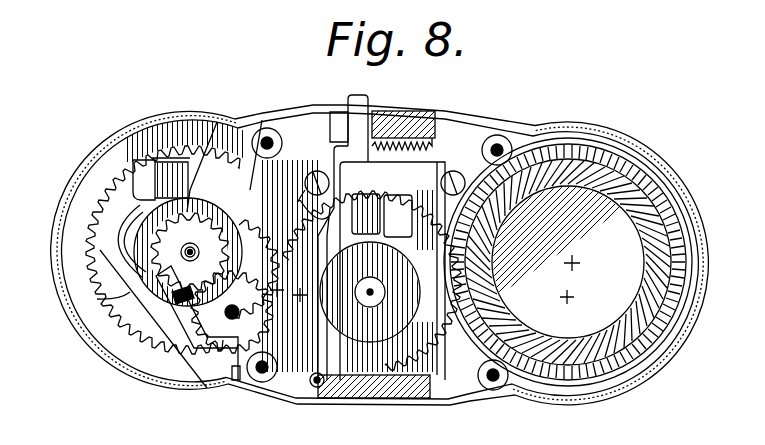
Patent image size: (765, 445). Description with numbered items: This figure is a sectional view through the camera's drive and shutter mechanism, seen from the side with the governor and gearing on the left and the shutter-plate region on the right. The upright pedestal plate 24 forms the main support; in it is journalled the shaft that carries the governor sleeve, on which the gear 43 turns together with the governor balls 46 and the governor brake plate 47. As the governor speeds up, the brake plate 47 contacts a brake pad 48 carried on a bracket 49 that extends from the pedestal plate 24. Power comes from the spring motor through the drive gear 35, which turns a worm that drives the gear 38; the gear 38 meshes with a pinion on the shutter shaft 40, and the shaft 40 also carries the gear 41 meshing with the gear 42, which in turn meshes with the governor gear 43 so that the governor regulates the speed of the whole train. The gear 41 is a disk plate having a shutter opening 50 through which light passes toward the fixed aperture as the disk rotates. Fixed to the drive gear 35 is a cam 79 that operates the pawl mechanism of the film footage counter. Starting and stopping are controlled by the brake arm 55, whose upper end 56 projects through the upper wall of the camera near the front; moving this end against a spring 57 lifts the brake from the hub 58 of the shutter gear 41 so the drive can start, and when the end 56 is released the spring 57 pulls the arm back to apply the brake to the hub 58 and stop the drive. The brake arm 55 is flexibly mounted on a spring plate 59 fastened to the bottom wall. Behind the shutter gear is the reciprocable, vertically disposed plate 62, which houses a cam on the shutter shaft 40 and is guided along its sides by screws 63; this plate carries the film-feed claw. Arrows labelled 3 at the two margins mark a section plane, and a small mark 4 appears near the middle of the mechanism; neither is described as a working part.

The section line 3- 3 is at (33, 236).
The axis marks 4 is at (288, 300).
The pedestal plate 24 is at (240, 202).
The drive gear 35 is at (152, 343).
The gear 38 is at (270, 262).
The shutter shaft 40 is at (382, 284).
The shutter gear 41 is at (437, 374).
The gear 42 is at (186, 340).
The gear 43 is at (248, 220).
The governor balls 46 is at (147, 227).
The governor brake plate 47 is at (97, 299).
The brake pad 48 is at (168, 305).
The bracket 49 is at (222, 295).
The shutter opening 50 is at (497, 303).
The brake arm 55 is at (306, 196).
The upper end of brake arm 56 is at (365, 90).
The spring 57 is at (410, 142).
The hub 58 is at (365, 290).
The spring plate 59 is at (316, 372).
The reciprocable plate 62 is at (455, 171).
The screws 63 is at (318, 171).
The cam 79 is at (140, 300).